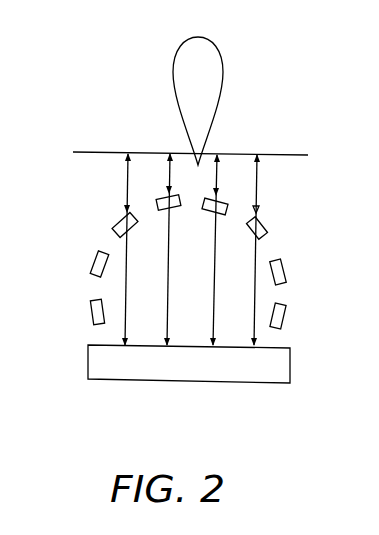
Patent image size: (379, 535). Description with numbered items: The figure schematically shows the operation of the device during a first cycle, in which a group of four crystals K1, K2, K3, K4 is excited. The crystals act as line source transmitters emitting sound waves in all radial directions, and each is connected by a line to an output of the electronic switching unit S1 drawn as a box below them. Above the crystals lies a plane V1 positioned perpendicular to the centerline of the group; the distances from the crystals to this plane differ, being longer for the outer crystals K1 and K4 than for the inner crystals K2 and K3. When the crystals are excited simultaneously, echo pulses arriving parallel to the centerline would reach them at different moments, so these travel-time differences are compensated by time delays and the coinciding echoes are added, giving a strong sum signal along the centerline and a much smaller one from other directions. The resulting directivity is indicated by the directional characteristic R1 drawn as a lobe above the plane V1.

The directional characteristic R1 is at (223, 58).
The plane V1 is at (209, 157).
The crystal K1 is at (137, 233).
The crystal K2 is at (176, 208).
The crystal K3 is at (223, 213).
The crystal K4 is at (267, 228).
The electronic switching unit S1 is at (88, 360).